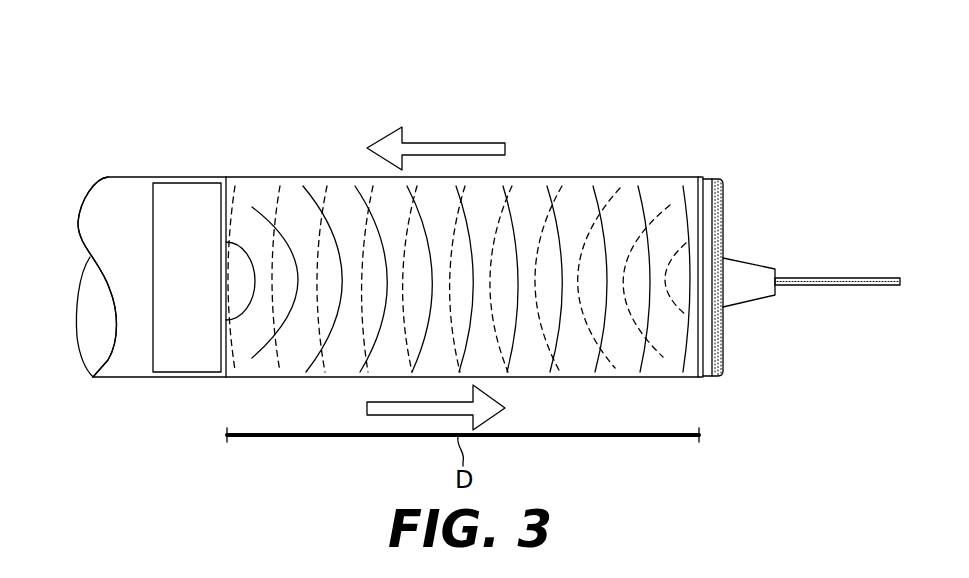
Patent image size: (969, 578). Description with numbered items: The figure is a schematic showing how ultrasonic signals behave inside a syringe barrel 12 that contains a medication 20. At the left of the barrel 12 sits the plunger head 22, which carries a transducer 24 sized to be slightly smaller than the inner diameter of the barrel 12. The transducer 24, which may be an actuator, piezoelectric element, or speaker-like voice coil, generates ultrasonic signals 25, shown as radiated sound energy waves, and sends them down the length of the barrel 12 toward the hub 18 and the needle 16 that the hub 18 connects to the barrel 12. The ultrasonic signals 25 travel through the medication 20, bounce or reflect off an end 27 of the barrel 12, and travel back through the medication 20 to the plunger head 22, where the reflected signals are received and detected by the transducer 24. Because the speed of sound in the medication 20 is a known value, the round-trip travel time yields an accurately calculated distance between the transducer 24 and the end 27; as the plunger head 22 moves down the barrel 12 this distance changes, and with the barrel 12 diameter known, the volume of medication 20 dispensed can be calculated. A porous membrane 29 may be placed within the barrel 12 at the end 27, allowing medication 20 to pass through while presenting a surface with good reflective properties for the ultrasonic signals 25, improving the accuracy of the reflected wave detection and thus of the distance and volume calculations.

The barrel 12 is at (588, 178).
The needle 16 is at (867, 278).
The hub 18 is at (745, 260).
The medication 20 is at (248, 192).
The plunger head 22 is at (127, 303).
The transducer 24 is at (197, 290).
The ultrasonic signals 25 is at (303, 187).
The end 27 is at (723, 187).
The porous membrane 29 is at (718, 180).